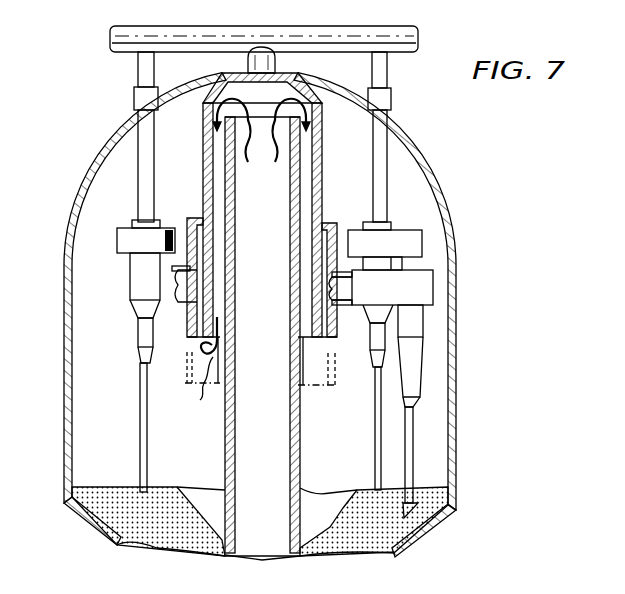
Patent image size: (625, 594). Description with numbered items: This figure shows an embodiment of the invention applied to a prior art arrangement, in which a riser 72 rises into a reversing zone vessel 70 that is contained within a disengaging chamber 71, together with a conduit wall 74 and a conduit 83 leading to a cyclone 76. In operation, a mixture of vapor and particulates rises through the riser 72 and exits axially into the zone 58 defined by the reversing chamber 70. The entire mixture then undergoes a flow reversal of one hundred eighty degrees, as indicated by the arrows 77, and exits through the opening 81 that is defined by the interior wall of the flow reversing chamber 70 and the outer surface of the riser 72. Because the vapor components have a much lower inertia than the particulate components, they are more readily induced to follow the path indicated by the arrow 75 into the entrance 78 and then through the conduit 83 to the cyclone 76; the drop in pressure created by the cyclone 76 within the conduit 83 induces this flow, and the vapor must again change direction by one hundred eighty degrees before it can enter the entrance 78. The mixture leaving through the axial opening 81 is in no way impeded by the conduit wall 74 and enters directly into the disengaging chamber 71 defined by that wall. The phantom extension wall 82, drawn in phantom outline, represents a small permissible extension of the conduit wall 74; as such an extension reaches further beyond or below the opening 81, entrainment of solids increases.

The zone 58 is at (267, 90).
The reversing zone vessel 70 is at (322, 150).
The disengaging chamber 71 is at (88, 192).
The riser 72 is at (225, 436).
The conduit wall 74 is at (334, 318).
The arrow 75 is at (207, 383).
The cyclone 76 is at (413, 318).
The arrows 77 is at (261, 150).
The entrance 78 is at (197, 319).
The opening 81 is at (306, 342).
The phantom extension wall 82 is at (193, 383).
The conduit 83 is at (178, 266).